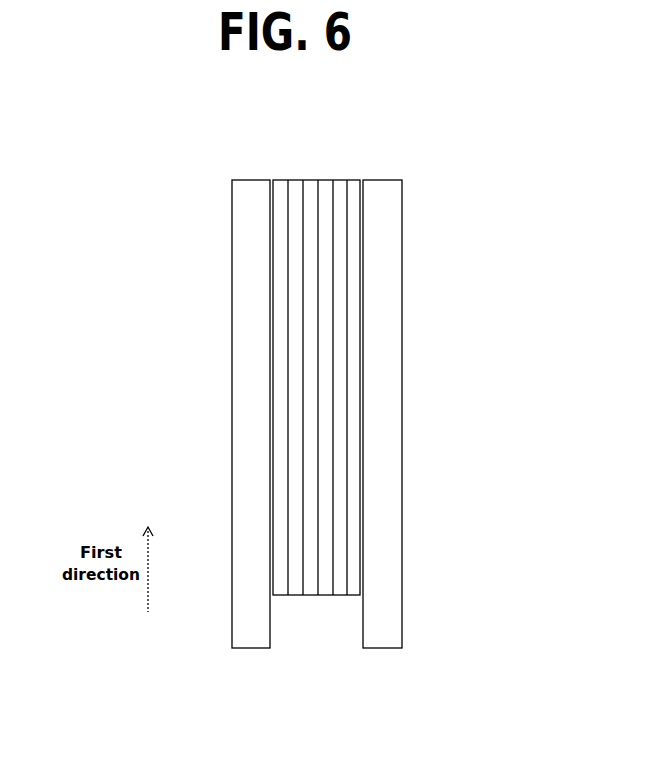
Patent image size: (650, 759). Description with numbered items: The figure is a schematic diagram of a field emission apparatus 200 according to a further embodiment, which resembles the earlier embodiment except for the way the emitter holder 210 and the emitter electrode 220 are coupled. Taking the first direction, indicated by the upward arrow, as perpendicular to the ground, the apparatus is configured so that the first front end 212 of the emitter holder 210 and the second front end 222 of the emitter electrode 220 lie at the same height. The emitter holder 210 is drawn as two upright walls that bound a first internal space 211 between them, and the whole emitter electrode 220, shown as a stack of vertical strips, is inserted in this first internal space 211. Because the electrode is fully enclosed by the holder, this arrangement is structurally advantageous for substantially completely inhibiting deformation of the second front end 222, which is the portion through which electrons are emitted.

The field emission apparatus 200 is at (158, 118).
The emitter holder 210 is at (232, 412).
The first internal space 211 is at (340, 628).
The first front end 212 is at (385, 180).
The emitter electrode 220 is at (368, 362).
The second front end 222 is at (311, 180).